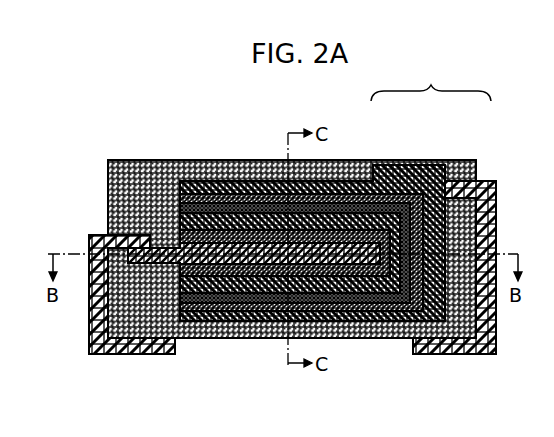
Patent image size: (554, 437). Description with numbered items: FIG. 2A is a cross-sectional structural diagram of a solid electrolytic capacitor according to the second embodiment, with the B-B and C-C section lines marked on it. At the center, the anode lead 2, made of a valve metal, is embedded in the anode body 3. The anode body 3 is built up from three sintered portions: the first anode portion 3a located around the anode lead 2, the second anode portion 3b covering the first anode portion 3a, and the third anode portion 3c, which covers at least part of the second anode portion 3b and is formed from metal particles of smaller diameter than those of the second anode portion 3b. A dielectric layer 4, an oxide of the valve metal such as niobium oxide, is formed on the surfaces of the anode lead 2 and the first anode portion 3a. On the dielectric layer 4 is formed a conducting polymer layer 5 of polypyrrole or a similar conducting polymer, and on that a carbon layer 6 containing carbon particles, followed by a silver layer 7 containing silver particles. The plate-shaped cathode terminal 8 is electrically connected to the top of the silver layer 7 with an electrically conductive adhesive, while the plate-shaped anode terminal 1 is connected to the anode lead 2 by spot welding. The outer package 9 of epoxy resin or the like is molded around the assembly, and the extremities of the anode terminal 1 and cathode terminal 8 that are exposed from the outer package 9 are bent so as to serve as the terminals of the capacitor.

The anode terminal 1 is at (111, 346).
The anode lead 2 is at (148, 239).
The anode body 3 is at (431, 81).
The first anode portion 3a is at (355, 172).
The second anode portion 3b is at (408, 158).
The third anode portion 3c is at (448, 155).
The dielectric layer 4 is at (262, 212).
The conducting polymer layer 5 is at (236, 200).
The carbon layer 6 is at (210, 190).
The silver layer 7 is at (188, 176).
The cathode terminal 8 is at (426, 346).
The outer package 9 is at (132, 158).